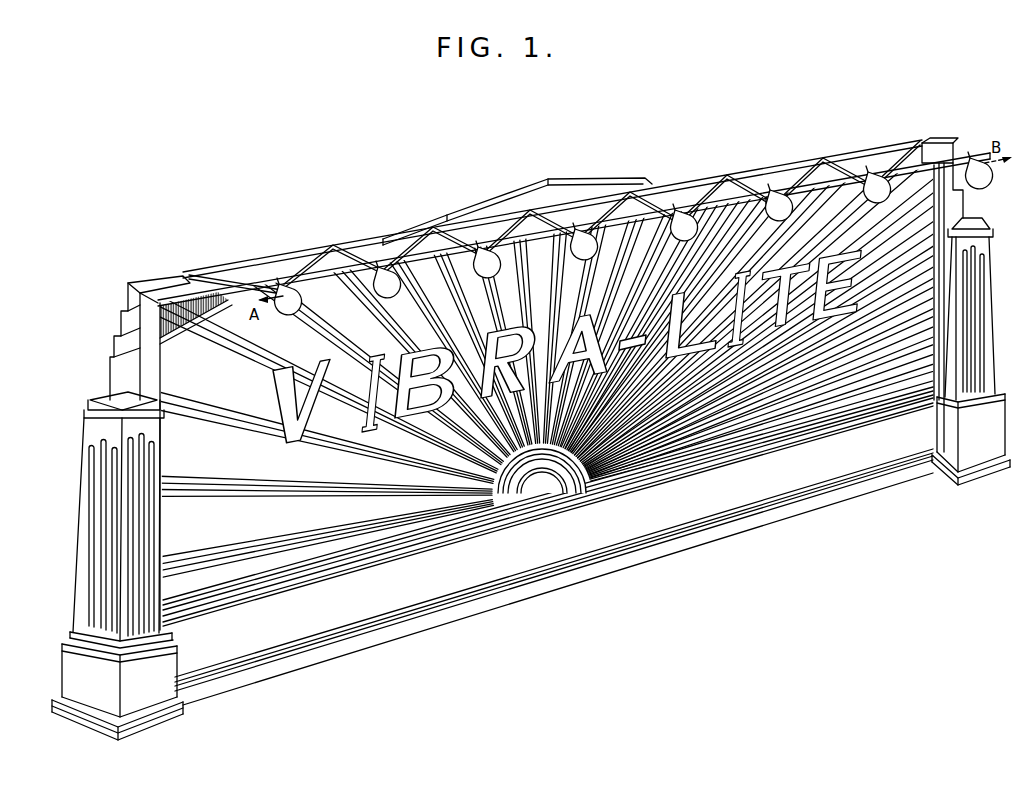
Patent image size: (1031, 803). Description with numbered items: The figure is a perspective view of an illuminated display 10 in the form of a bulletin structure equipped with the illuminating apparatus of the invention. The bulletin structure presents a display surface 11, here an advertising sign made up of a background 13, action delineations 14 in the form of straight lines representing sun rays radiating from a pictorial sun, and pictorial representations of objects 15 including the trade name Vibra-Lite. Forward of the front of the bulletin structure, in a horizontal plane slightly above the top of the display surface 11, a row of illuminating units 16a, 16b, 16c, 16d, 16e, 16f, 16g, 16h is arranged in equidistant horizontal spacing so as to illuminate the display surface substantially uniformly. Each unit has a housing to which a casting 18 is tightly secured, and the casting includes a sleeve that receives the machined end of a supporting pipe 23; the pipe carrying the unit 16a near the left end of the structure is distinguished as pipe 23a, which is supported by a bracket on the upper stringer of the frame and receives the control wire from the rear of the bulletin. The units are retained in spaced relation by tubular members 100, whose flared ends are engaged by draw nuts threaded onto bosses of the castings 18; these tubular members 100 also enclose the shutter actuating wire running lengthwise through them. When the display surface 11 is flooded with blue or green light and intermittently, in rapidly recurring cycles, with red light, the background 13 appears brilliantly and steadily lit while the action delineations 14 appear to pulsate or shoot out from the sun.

The illuminated display 10 is at (110, 371).
The display surface 11 is at (515, 352).
The background 13 is at (180, 338).
The action delineations 14 is at (220, 336).
The pictorial representations of objects 15 is at (360, 414).
The illuminating unit 16a is at (290, 314).
The illuminating unit 16b is at (386, 298).
The illuminating unit 16c is at (486, 278).
The illuminating unit 16d is at (583, 260).
The illuminating unit 16e is at (684, 241).
The illuminating unit 16f is at (776, 222).
The illuminating unit 16g is at (870, 200).
The illuminating unit 16h is at (988, 181).
The casting 18 is at (773, 200).
The supporting pipe 23 is at (346, 263).
The supporting pipe 23a is at (237, 272).
The tubular members 100 is at (321, 284).